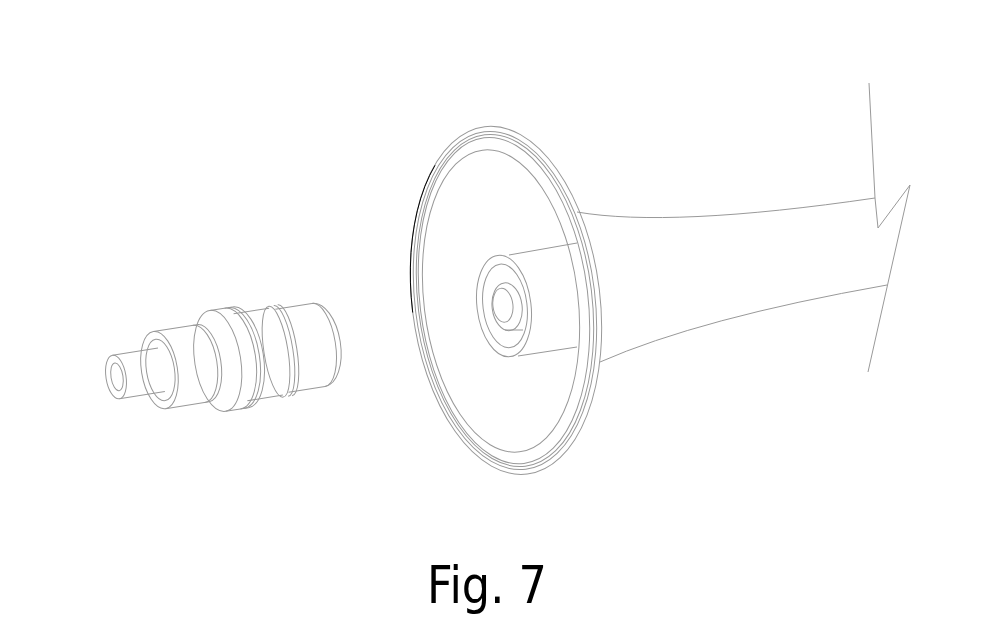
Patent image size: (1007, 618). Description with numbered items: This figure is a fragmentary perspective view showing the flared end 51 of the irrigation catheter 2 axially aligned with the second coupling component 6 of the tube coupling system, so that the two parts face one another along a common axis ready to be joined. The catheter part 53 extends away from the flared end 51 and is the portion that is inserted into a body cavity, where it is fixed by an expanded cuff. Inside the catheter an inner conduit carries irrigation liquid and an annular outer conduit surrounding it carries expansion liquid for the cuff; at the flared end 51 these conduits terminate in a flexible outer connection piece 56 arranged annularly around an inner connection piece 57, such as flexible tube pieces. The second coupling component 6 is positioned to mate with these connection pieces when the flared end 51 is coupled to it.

The irrigation catheter 2 is at (650, 256).
The second coupling component 6 is at (201, 299).
The flared end 51 is at (535, 180).
The catheter part 53 is at (710, 312).
The outer connection piece 56 is at (524, 293).
The inner connection piece 57 is at (502, 317).